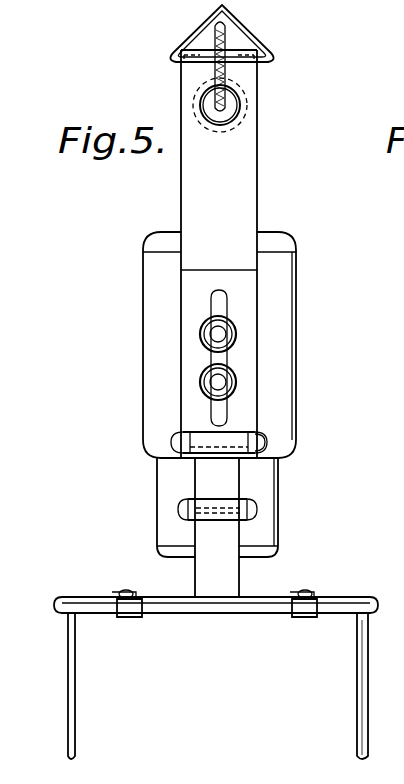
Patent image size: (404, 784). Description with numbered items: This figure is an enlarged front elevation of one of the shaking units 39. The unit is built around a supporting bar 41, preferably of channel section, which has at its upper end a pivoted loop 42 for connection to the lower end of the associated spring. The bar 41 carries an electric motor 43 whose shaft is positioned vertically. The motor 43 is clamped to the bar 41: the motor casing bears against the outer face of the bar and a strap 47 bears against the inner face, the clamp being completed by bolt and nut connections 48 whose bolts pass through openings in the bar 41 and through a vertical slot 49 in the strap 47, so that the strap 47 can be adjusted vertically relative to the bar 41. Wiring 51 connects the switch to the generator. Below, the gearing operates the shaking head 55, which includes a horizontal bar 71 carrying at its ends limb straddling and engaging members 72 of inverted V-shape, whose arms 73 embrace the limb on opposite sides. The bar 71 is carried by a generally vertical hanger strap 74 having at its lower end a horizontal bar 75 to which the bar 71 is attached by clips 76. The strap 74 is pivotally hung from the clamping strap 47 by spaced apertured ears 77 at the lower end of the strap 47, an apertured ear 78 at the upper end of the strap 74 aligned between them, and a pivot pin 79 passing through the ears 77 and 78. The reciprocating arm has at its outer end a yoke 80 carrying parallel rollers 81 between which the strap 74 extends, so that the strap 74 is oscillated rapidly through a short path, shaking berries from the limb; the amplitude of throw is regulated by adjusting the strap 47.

The shaking unit 39 is at (258, 182).
The supporting bar 41 is at (248, 112).
The pivoted loop 42 is at (252, 28).
The motor 43 is at (148, 346).
The strap 47 is at (240, 285).
The bolt and nut connections 48 is at (230, 338).
The vertical slot 49 is at (222, 302).
The wiring 51 is at (222, 64).
The shaking head 55 is at (146, 590).
The horizontal bar 71 is at (376, 610).
The limb straddling and engaging members 72 is at (66, 645).
The arms 73 is at (360, 688).
The hanger strap 74 is at (230, 533).
The horizontal bar 75 is at (285, 597).
The clips 76 is at (312, 632).
The apertured ears 77 is at (250, 435).
The apertured ear 78 is at (182, 445).
The pivot pin 79 is at (262, 447).
The yoke 80 is at (185, 505).
The rollers 81 is at (210, 510).